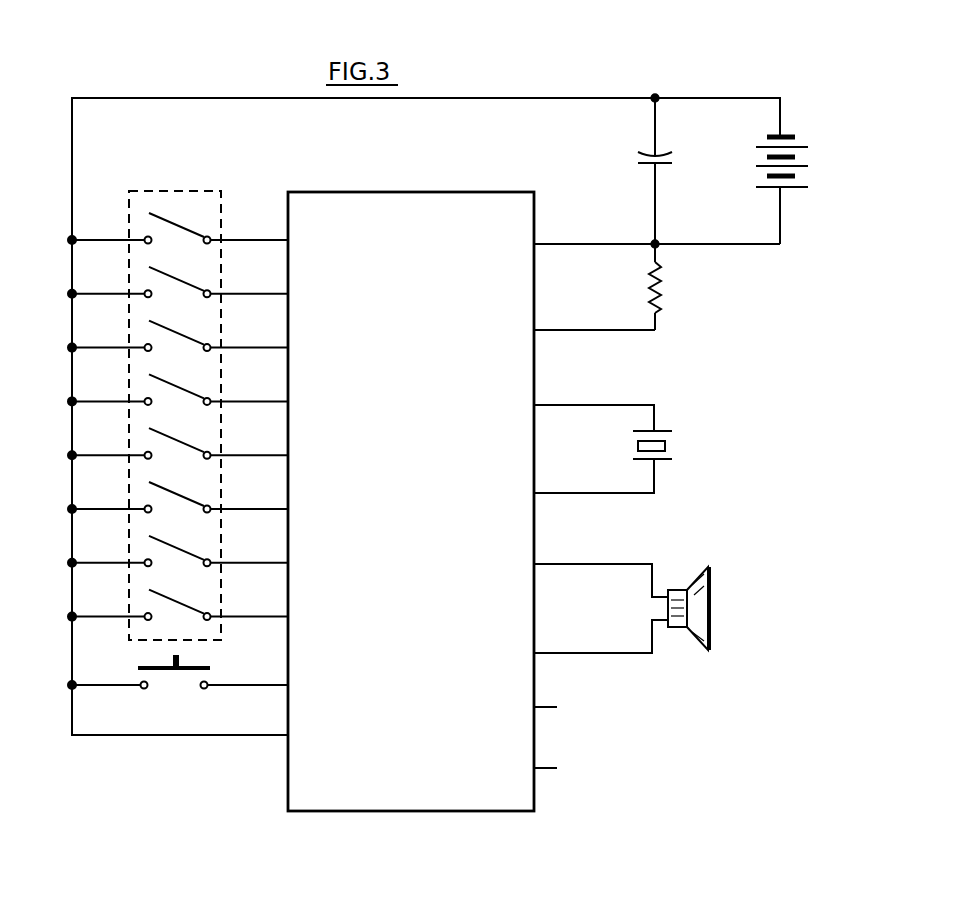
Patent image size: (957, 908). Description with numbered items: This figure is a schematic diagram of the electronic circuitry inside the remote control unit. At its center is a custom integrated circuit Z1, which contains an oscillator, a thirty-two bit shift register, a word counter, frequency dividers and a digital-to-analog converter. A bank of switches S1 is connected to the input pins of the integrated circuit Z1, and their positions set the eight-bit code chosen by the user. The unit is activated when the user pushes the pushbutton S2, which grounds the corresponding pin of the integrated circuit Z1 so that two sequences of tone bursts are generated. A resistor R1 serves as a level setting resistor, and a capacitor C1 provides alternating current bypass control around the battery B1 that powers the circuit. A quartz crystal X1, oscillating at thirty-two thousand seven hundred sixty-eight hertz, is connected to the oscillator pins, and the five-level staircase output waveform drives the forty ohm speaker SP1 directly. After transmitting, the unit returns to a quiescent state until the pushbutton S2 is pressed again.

The custom integrated circuit Z1 is at (410, 501).
The switches S1 is at (178, 399).
The pushbutton S2 is at (178, 684).
The capacitor C1 is at (674, 154).
The resistor R1 is at (661, 292).
The battery B1 is at (809, 137).
The quartz crystal X1 is at (676, 445).
The speaker SP1 is at (711, 600).